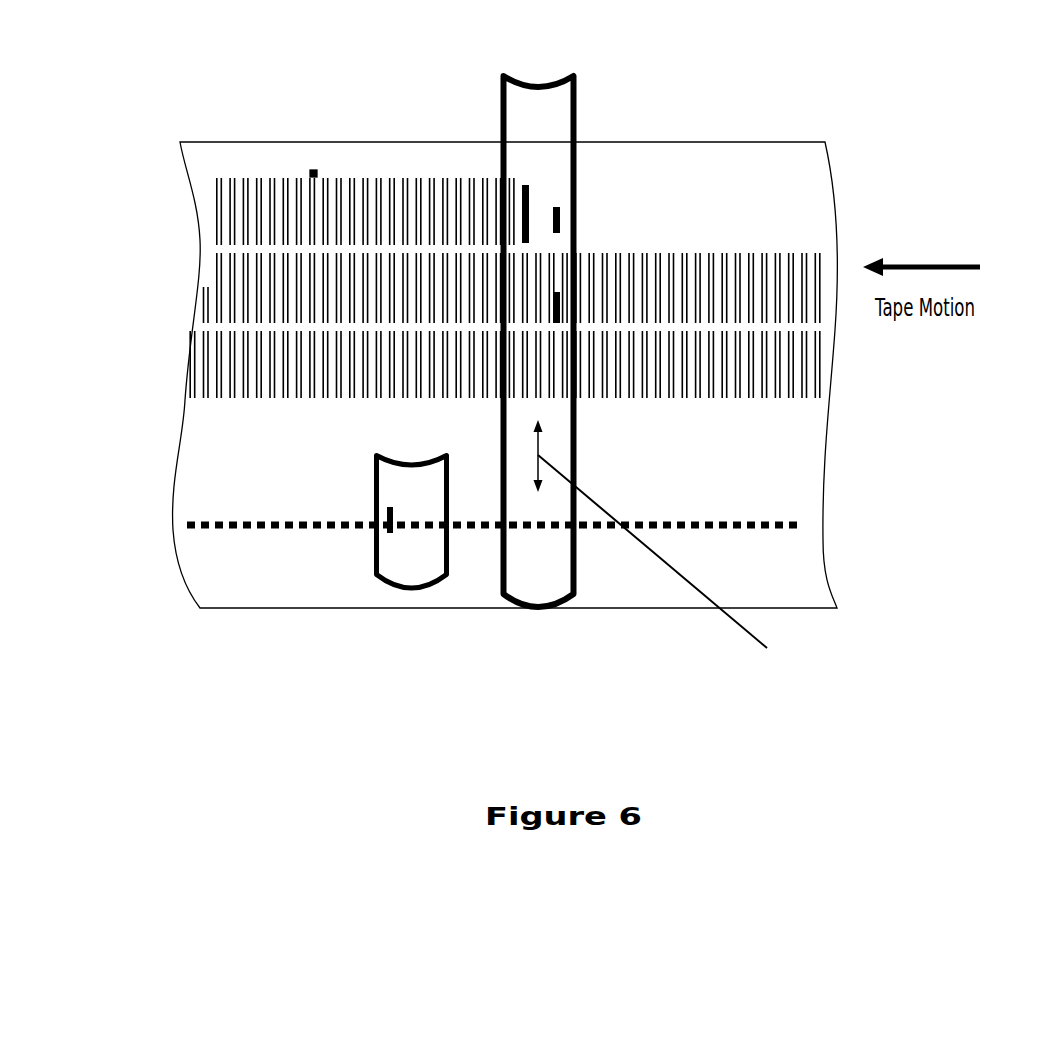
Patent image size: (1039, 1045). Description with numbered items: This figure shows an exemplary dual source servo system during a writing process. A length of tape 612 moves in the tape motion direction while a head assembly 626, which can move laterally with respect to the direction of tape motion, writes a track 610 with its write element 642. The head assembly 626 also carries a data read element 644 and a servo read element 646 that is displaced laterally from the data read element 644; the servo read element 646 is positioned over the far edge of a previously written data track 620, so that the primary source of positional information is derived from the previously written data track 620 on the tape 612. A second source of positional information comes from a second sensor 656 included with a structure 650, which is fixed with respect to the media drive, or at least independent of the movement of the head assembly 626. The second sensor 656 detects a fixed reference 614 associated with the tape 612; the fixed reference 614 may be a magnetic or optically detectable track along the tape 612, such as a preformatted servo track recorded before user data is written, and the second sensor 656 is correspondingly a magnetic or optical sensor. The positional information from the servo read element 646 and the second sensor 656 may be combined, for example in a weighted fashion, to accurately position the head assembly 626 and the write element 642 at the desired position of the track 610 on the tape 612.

The track 610 is at (314, 172).
The tape 612 is at (835, 188).
The fixed reference 614 is at (209, 532).
The previously written data track 620 is at (658, 258).
The head assembly 626 is at (575, 597).
The write element 642 is at (527, 186).
The data read element 644 is at (557, 208).
The servo read element 646 is at (557, 323).
The structure 650 is at (394, 585).
The second sensor 656 is at (397, 533).